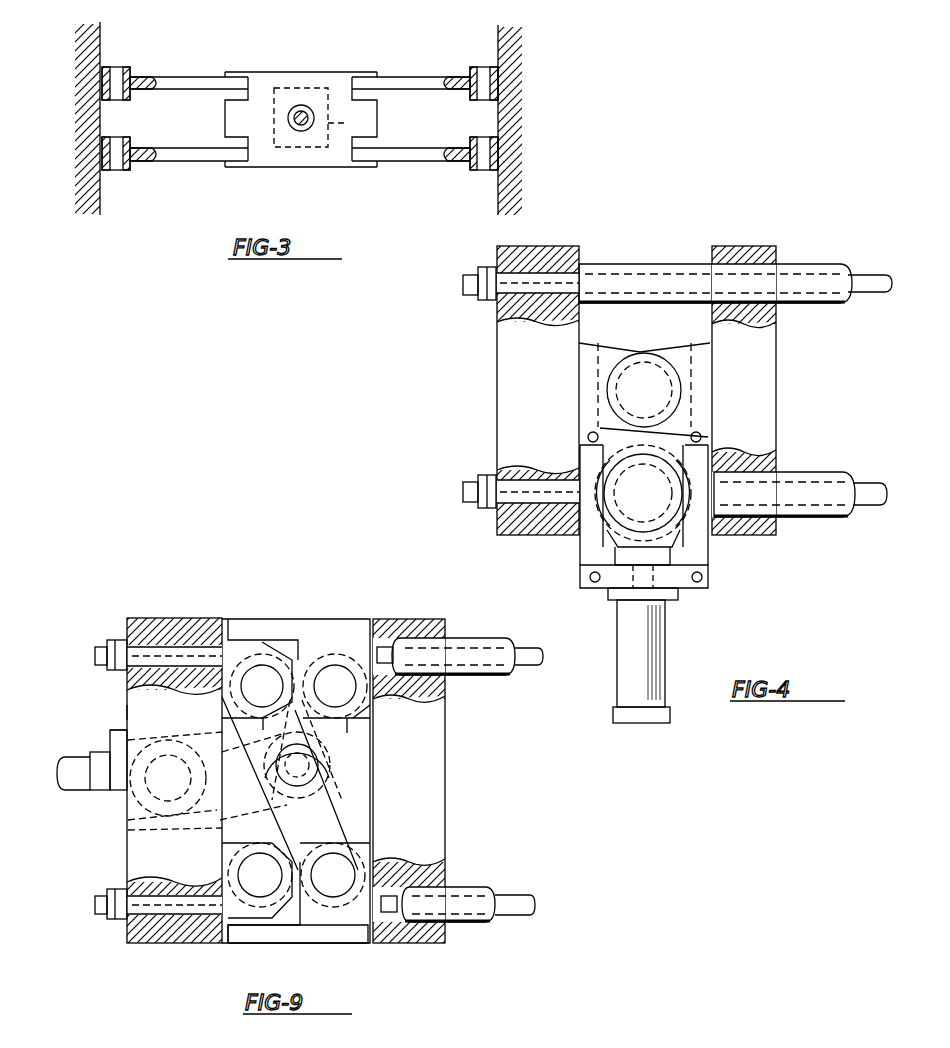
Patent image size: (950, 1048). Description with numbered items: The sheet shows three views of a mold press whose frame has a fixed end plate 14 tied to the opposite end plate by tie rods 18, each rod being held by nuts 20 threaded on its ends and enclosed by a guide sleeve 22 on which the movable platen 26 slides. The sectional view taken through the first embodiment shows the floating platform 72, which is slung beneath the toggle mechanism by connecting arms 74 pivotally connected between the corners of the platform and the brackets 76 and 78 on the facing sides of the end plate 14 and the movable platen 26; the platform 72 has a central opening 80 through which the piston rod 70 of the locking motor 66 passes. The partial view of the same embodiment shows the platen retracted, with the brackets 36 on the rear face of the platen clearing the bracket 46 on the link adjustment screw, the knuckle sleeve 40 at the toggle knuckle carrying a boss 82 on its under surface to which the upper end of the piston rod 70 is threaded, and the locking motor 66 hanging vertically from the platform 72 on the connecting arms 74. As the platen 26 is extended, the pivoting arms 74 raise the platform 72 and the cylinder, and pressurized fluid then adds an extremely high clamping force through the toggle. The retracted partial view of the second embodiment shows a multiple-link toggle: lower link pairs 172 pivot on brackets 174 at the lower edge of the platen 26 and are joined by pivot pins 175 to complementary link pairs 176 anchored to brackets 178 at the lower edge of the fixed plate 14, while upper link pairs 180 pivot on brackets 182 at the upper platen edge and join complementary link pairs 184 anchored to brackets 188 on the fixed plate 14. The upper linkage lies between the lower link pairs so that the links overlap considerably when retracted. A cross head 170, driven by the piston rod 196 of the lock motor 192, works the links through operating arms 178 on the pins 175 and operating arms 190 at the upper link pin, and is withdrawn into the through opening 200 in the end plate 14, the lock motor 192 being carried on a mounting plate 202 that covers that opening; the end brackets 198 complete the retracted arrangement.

In FIG. 3, the end plate 14 is at (91, 44).
In FIG. 4, the end plate 14 is at (512, 360).
In FIG. 9, the end plate 14 is at (152, 866).
In FIG. 4, the tie rods 18 is at (868, 277).
In FIG. 9, the tie rods 18 is at (530, 668).
In FIG. 4, the nuts 20 is at (486, 272).
In FIG. 4, the guide sleeves 22 is at (793, 270).
In FIG. 9, the guide sleeves 22 is at (460, 640).
In FIG. 3, the movable platen 26 is at (508, 187).
In FIG. 4, the movable platen 26 is at (762, 370).
In FIG. 9, the movable platen 26 is at (435, 773).
In FIG. 4, the brackets 36 is at (697, 353).
In FIG. 4, the knuckle sleeve 40 is at (620, 542).
In FIG. 4, the bracket 46 is at (583, 358).
In FIG. 3, the locking motor 66 is at (350, 125).
In FIG. 4, the locking motor 66 is at (650, 642).
In FIG. 3, the piston rod 70 is at (304, 105).
In FIG. 3, the floating platform 72 is at (315, 167).
In FIG. 4, the floating platform 72 is at (680, 582).
In FIG. 3, the connecting arms 74 is at (448, 162).
In FIG. 4, the connecting arms 74 is at (697, 552).
In FIG. 3, the bracket 76 is at (490, 67).
In FIG. 3, the bracket 78 is at (108, 67).
In FIG. 3, the central opening 80 is at (288, 106).
In FIG. 4, the boss 82 is at (632, 555).
In FIG. 9, the cross head 170 is at (128, 705).
In FIG. 9, the link pairs 172 is at (370, 828).
In FIG. 9, the brackets 174 is at (355, 928).
In FIG. 9, the pivot pins 175 is at (370, 752).
In FIG. 9, the complementary link pairs 176 is at (262, 833).
In FIG. 9, the brackets 178 is at (232, 752).
In FIG. 9, the link pairs 180 is at (370, 733).
In FIG. 9, the brackets 182 is at (335, 632).
In FIG. 9, the complementary link pairs 184 is at (258, 716).
In FIG. 9, the brackets 188 is at (235, 652).
In FIG. 9, the operating arms 190 is at (238, 817).
In FIG. 9, the lock motor 192 is at (98, 800).
In FIG. 9, the piston rod 196 is at (110, 737).
In FIG. 9, the end bracket 198 is at (258, 628).
In FIG. 9, the through opening 200 is at (137, 845).
In FIG. 9, the mounting plate 202 is at (122, 730).